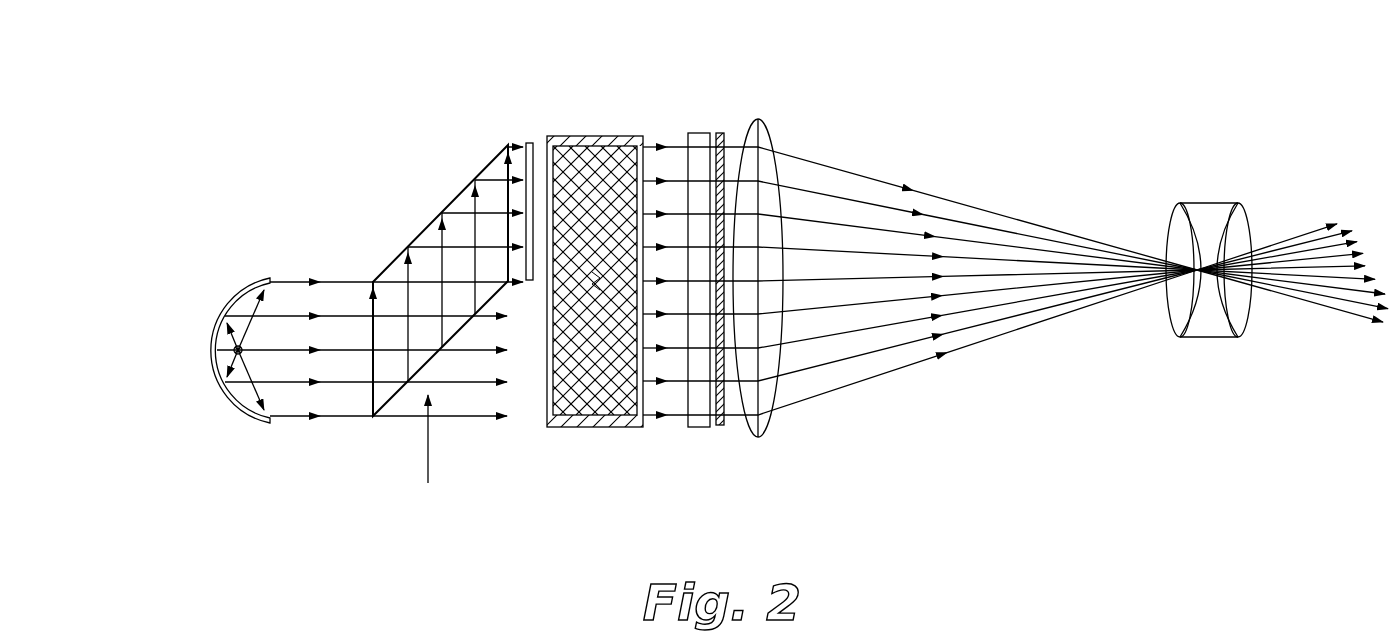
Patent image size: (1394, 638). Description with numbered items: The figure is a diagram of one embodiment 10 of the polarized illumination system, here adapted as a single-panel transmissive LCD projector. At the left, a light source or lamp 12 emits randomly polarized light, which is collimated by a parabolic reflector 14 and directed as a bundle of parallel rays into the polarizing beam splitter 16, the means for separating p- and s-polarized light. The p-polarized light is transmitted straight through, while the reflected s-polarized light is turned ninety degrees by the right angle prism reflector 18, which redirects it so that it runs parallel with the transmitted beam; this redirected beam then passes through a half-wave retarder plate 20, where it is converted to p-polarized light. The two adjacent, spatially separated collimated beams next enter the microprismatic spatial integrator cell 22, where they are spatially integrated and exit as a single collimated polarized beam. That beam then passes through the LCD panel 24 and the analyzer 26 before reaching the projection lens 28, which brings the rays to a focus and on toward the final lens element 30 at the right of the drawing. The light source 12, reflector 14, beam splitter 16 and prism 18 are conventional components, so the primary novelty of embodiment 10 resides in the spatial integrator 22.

The polarized illumination system 10 is at (258, 146).
The light source 12 is at (266, 387).
The parabolic reflector 14 is at (230, 298).
The polarizing beam splitter 16 is at (428, 460).
The right angle prism reflector 18 is at (418, 232).
The half-wave retarder plate 20 is at (527, 142).
The spatial integrator cell 22 is at (585, 132).
The LCD panel 24 is at (700, 430).
The analyzer 26 is at (719, 133).
The projection lens 28 is at (770, 130).
The lens assembly 30 is at (1188, 338).